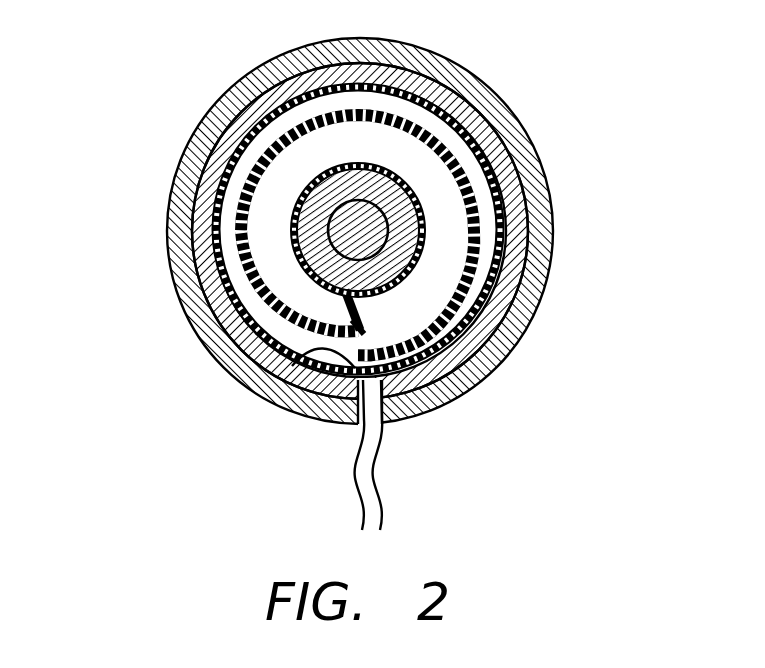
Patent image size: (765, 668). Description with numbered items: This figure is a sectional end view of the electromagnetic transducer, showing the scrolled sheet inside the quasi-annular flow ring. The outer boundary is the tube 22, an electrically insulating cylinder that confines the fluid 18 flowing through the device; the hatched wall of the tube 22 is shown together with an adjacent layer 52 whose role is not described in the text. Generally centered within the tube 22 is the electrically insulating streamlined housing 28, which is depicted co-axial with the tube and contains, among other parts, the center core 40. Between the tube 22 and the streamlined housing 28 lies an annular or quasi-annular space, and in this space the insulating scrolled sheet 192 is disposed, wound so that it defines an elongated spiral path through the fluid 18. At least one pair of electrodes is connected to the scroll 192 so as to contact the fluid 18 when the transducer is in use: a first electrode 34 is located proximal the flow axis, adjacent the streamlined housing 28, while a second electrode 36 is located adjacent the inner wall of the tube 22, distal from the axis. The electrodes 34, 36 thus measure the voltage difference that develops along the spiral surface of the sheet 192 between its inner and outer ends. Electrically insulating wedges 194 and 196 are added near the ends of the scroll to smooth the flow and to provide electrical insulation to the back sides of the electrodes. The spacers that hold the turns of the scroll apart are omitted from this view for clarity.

The fluid 18 is at (373, 140).
The tube 22 is at (222, 168).
The streamlined housing 28 is at (410, 180).
The first electrode 34 is at (395, 362).
The second electrode 36 is at (357, 316).
The center core 40 is at (168, 257).
The inner housing ring 52 is at (264, 96).
The scrolled sheet 192 is at (477, 238).
The electrically insulating wedge 194 is at (278, 348).
The electrically insulating wedge 196 is at (387, 303).